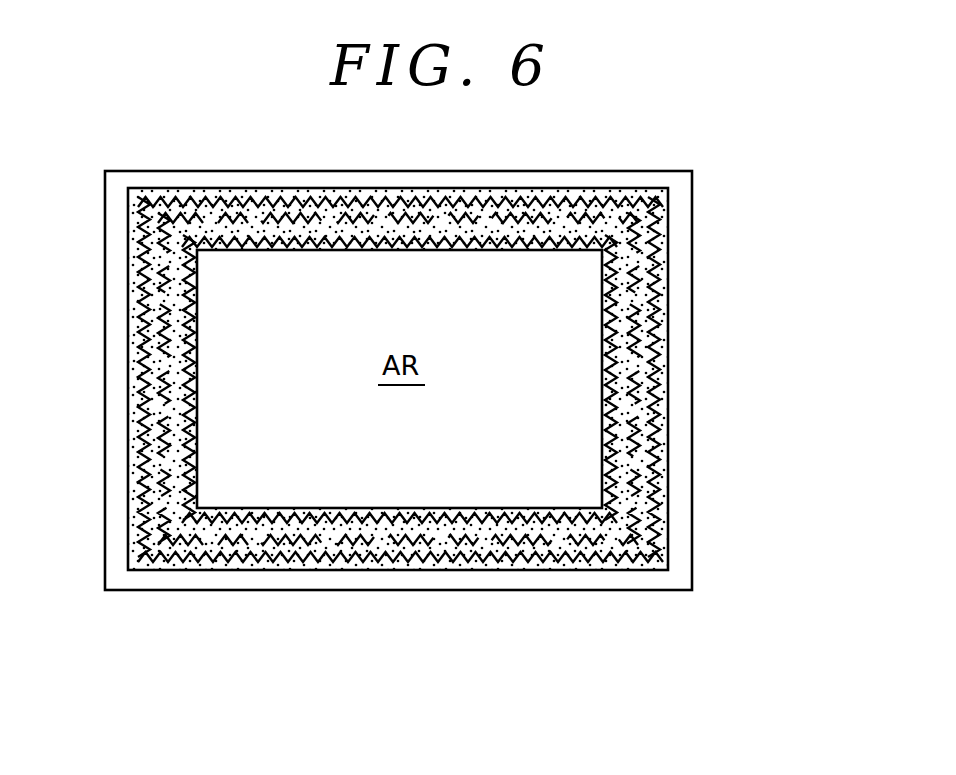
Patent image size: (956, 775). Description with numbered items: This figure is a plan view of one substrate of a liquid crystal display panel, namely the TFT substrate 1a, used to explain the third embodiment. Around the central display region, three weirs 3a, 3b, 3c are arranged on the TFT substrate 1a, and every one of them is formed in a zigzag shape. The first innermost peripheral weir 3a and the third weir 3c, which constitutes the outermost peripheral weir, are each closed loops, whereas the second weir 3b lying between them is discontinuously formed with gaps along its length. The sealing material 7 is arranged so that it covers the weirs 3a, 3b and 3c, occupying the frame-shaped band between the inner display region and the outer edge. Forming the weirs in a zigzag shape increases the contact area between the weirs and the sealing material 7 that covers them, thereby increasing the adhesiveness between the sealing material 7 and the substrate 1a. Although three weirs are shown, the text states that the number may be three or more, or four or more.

The TFT substrate 1a is at (617, 590).
The sealing material 7 is at (640, 332).
The first innermost peripheral weir 3a is at (627, 373).
The second weir 3b is at (635, 443).
The third weir 3c is at (653, 507).